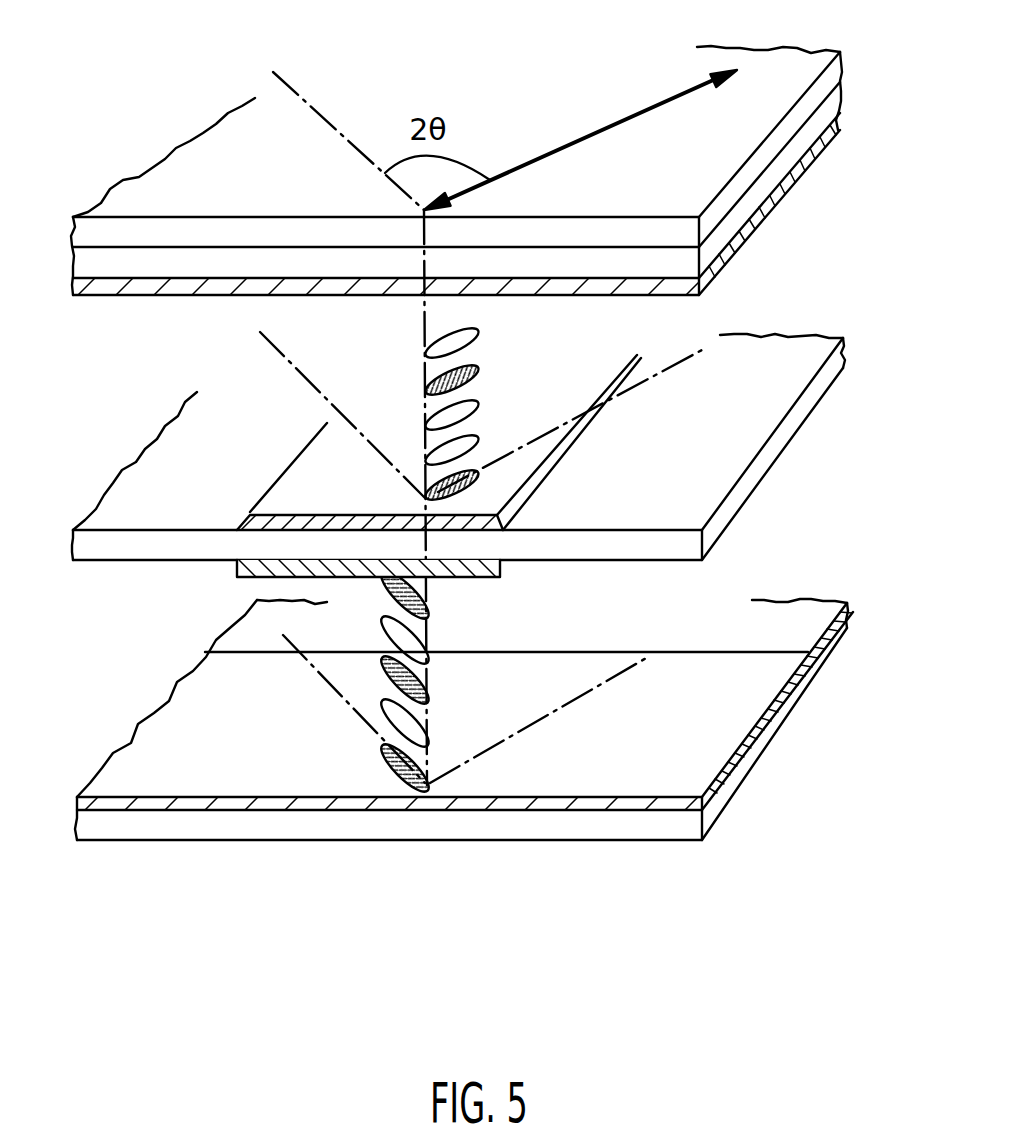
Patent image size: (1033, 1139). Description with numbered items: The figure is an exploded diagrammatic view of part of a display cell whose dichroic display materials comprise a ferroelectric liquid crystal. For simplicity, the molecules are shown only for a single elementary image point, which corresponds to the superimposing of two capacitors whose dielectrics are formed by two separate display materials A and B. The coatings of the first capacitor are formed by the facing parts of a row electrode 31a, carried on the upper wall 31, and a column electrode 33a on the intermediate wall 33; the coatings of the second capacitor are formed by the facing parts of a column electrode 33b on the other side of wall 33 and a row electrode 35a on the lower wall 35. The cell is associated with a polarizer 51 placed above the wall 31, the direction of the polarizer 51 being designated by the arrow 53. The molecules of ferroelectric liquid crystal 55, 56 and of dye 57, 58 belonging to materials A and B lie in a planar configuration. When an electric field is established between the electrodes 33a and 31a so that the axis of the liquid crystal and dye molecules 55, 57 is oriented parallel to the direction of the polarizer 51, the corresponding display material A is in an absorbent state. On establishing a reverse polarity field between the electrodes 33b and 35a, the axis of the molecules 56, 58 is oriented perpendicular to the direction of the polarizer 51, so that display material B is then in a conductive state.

The polarizer 51 is at (798, 113).
The wall 31 is at (780, 163).
The row electrode 31a is at (773, 205).
The arrow 53 is at (600, 125).
The ferroelectric liquid crystal molecules 55 is at (452, 332).
The dye molecules 57 is at (473, 367).
The ferroelectric liquid crystal molecules 56 is at (430, 643).
The dye molecules 58 is at (437, 683).
The intermediate wall 33 is at (810, 398).
The column electrode 33a is at (250, 510).
The column electrode 33b is at (237, 570).
The wall 35 is at (390, 830).
The row electrode 35a is at (550, 807).
The display material A is at (384, 463).
The display material B is at (384, 765).